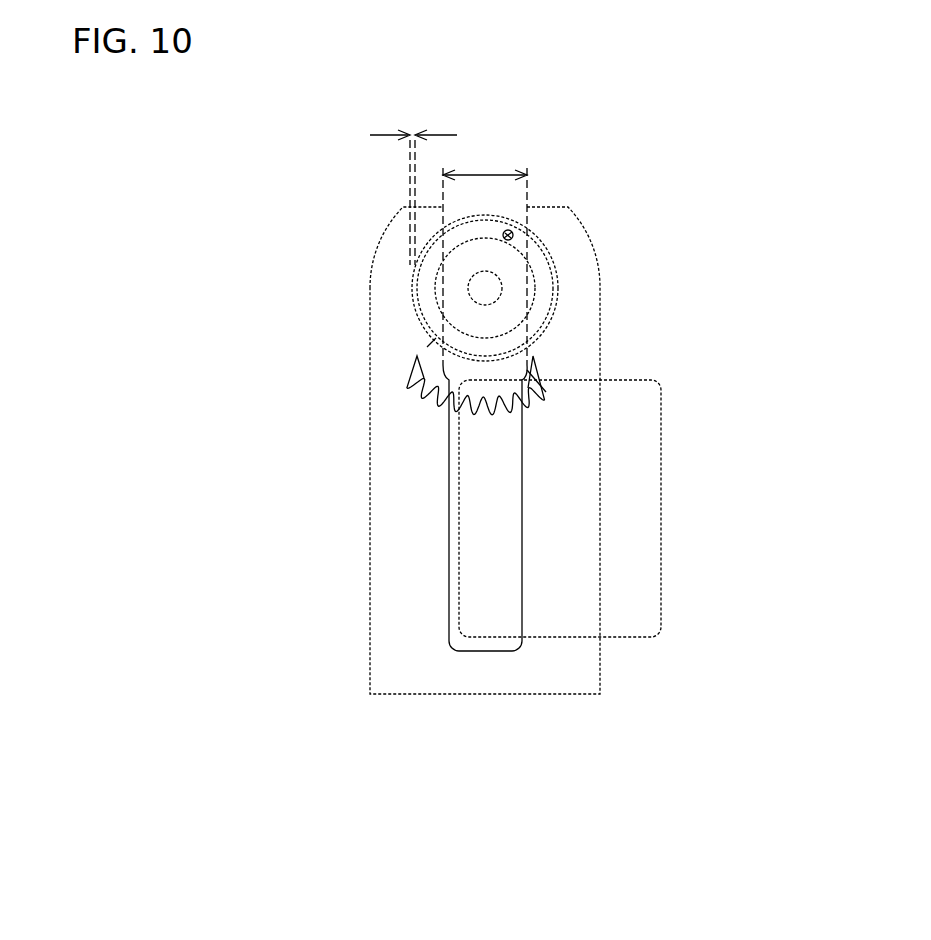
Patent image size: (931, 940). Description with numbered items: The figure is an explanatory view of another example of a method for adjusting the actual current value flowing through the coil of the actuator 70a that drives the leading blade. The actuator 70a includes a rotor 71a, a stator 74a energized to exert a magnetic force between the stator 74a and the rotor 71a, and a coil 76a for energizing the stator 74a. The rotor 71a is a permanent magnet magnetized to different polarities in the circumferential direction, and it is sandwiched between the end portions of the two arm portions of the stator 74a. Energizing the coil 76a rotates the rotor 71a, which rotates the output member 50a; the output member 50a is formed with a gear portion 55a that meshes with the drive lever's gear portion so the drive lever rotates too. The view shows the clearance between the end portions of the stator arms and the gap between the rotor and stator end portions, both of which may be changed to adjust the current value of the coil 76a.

The actuator 70a is at (646, 250).
The rotor 71a is at (457, 316).
The output member 50a is at (413, 357).
The gear portion 55a is at (433, 405).
The stator 74a is at (392, 688).
The coil 76a is at (641, 412).